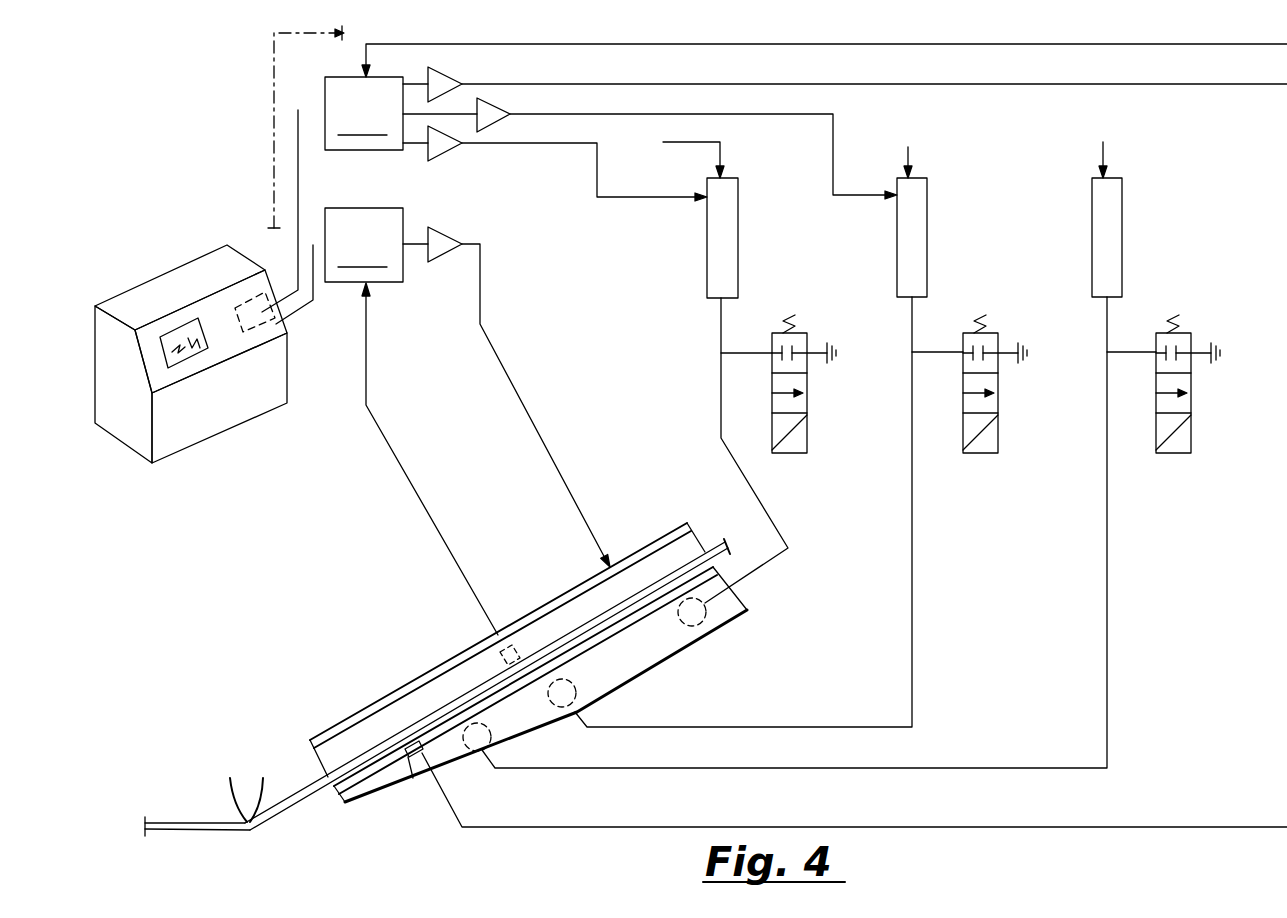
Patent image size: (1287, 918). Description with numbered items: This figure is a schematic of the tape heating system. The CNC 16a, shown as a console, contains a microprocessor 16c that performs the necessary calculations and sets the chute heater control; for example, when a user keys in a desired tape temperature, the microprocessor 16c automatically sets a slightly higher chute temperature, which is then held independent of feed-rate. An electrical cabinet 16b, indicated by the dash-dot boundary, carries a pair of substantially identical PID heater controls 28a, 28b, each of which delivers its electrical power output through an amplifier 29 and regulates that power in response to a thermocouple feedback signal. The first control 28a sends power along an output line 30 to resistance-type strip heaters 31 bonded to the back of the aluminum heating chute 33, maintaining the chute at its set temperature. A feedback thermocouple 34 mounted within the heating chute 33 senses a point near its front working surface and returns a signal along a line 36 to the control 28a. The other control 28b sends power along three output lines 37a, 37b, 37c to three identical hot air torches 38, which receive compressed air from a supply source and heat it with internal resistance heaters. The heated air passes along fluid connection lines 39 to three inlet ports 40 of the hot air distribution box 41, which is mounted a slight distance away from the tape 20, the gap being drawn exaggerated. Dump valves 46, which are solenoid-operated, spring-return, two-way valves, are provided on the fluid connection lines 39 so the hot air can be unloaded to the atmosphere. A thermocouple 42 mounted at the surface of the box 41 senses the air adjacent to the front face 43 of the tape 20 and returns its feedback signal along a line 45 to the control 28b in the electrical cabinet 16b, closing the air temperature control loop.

The CNC 16a is at (258, 484).
The electrical cabinet 16b is at (270, 124).
The microprocessor 16c is at (345, 370).
The tape 20 is at (208, 823).
The first control 28a is at (376, 245).
The second control 28b is at (806, 97).
The amplifier 29 is at (452, 72).
The output line 30 is at (505, 370).
The strip heaters 31 is at (627, 556).
The heating chute 33 is at (703, 537).
The feedback thermocouple 34 is at (500, 650).
The line 36 is at (402, 467).
The output line 37a is at (565, 187).
The output line 37b is at (632, 116).
The output line 37c is at (775, 81).
The hot air torches 38 is at (707, 240).
The fluid connection lines 39 is at (721, 430).
The inlet ports 40 is at (720, 627).
The hot air distribution box 41 is at (648, 670).
The thermocouple 42 is at (410, 772).
The front face 43 is at (293, 805).
The line 45 is at (528, 825).
The dump valves 46 is at (808, 447).